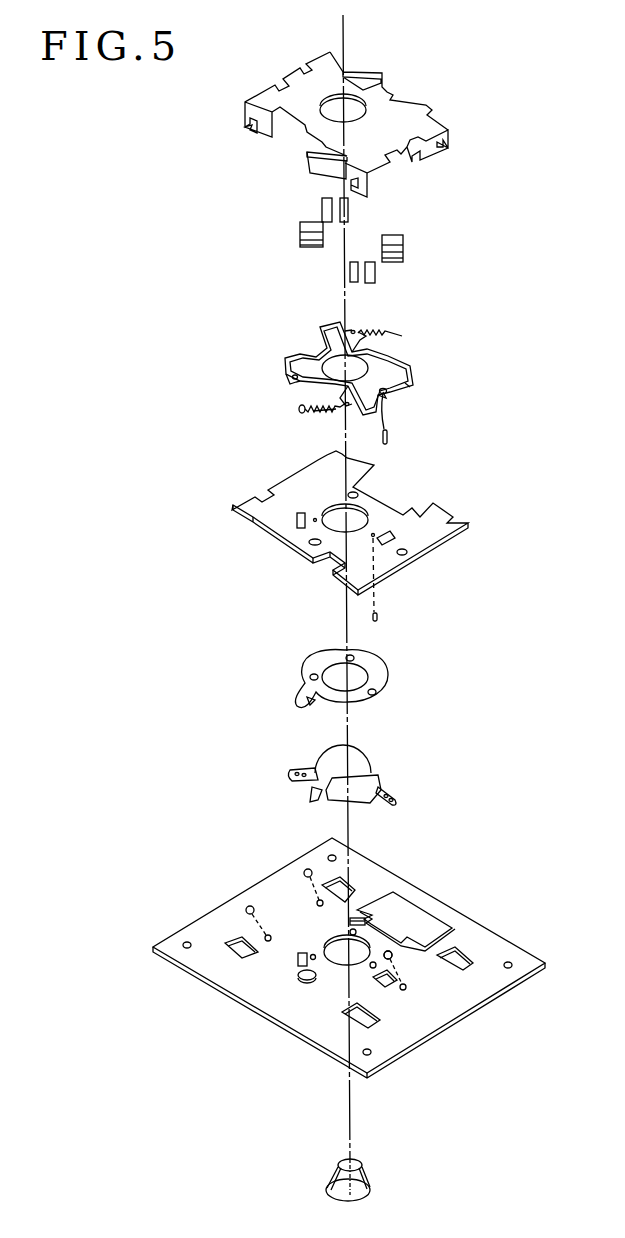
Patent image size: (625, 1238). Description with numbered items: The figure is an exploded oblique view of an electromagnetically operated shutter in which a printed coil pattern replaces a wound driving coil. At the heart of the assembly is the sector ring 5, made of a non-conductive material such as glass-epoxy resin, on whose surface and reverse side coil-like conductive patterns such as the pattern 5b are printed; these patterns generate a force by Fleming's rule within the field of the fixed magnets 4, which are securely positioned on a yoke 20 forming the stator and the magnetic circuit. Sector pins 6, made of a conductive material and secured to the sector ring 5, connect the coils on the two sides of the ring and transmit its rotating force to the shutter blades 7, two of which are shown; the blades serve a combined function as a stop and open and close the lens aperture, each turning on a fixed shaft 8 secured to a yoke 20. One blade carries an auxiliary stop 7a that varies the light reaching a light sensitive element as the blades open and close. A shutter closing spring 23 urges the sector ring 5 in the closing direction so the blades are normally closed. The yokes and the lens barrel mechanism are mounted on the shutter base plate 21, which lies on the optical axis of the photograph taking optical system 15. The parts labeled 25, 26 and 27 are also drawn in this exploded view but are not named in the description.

The shield bracket 25 is at (430, 121).
The magnet 4 is at (404, 252).
The sector ring 5 is at (413, 368).
The coil-like conductive pattern 5b is at (413, 385).
The sector pin 6 is at (300, 410).
The shutter closing spring 23 is at (323, 413).
The yoke 20 is at (438, 543).
The fixed shaft 8 is at (378, 617).
The ring washer 26 is at (377, 673).
The shutter blade 7 is at (380, 783).
The auxiliary stop 7a is at (310, 793).
The shutter base plate 21 is at (517, 967).
The pin 27 is at (393, 957).
The photograph taking optical system 15 is at (370, 1187).